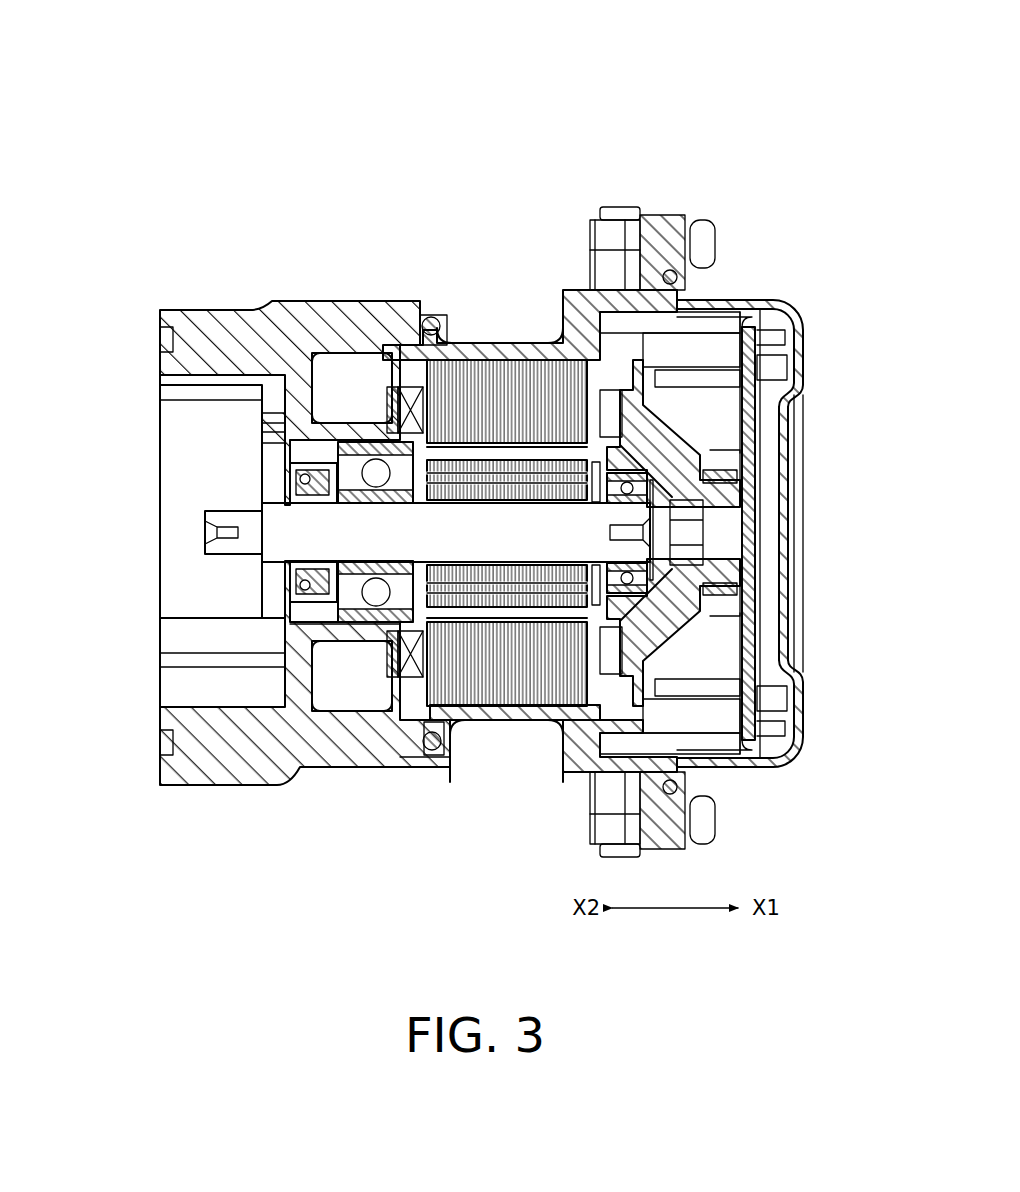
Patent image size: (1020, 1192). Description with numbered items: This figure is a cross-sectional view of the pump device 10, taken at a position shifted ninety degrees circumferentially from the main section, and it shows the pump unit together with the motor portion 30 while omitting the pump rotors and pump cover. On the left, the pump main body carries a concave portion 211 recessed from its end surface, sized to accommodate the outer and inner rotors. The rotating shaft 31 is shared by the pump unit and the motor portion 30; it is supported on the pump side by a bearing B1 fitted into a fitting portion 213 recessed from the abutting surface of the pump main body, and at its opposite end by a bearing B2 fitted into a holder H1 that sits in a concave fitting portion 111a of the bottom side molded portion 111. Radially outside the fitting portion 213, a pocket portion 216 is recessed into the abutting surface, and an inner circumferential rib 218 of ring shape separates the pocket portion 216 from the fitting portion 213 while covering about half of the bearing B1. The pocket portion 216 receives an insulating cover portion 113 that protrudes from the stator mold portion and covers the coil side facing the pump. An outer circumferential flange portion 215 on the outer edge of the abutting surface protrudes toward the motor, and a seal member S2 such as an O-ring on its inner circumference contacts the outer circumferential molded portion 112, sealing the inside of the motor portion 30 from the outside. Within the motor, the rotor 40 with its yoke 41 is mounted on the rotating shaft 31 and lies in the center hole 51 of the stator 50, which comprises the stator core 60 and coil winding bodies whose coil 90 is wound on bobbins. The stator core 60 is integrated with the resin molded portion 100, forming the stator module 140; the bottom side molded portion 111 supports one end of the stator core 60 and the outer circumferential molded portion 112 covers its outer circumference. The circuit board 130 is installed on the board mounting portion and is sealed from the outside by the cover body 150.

The pump device 10 is at (486, 118).
The motor portion 30 is at (514, 600).
The rotating shaft 31 is at (227, 548).
The rotor 40 is at (550, 722).
The yoke 41 is at (458, 690).
The stator 50 is at (555, 320).
The center hole 51 is at (482, 450).
The stator core 60 is at (528, 374).
The coil 90 is at (432, 660).
The resin molded portion 100 is at (785, 570).
The bottom side molded portion 111 is at (650, 422).
The concave fitting portion 111a is at (630, 558).
The outer circumferential molded portion 112 is at (486, 760).
The insulating cover portion 113 is at (382, 650).
The circuit board 130 is at (795, 670).
The stator module 140 is at (565, 298).
The cover body 150 is at (800, 354).
The concave portion 211 is at (188, 417).
The fitting portion 213 is at (336, 440).
The outer circumferential flange portion 215 is at (445, 335).
The pocket portion 216 is at (347, 380).
The inner circumferential rib 218 is at (363, 435).
The bearing B1 is at (377, 625).
The bearing B2 is at (710, 468).
The holder H1 is at (718, 604).
The seal member S2 is at (433, 318).